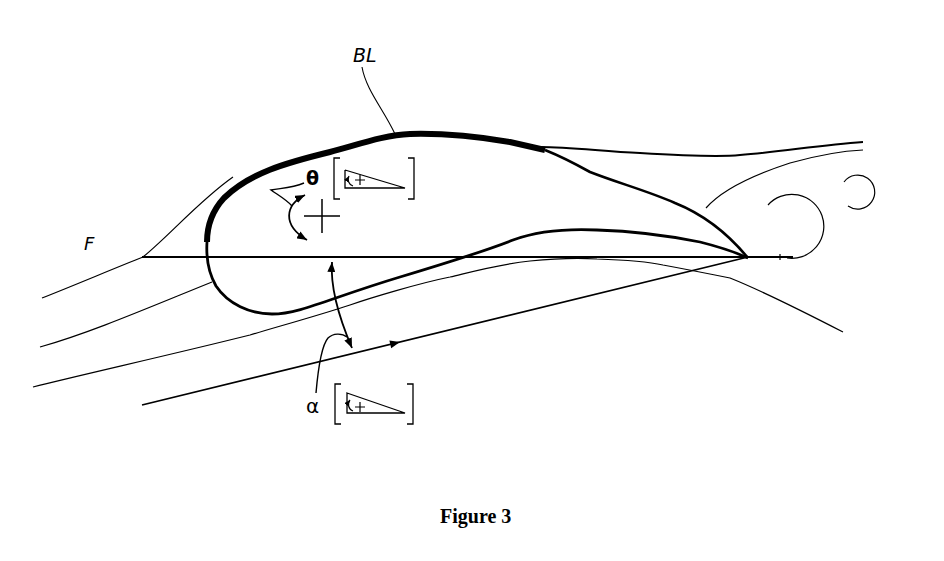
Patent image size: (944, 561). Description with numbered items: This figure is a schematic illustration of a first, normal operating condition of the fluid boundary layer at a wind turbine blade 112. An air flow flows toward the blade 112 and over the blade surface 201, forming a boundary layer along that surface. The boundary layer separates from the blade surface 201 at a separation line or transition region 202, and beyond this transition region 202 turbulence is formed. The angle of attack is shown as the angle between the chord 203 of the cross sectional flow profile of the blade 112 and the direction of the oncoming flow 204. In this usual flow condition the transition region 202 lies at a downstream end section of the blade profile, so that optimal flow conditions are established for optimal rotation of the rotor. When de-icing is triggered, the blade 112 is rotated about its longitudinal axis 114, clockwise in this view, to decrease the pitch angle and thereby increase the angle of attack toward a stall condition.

The wind turbine blade 112 is at (252, 224).
The longitudinal axis 114 is at (329, 214).
The blade surface 201 is at (503, 132).
The transition region 202 is at (700, 206).
The chord 203 is at (402, 257).
The direction of the oncoming flow 204 is at (477, 323).